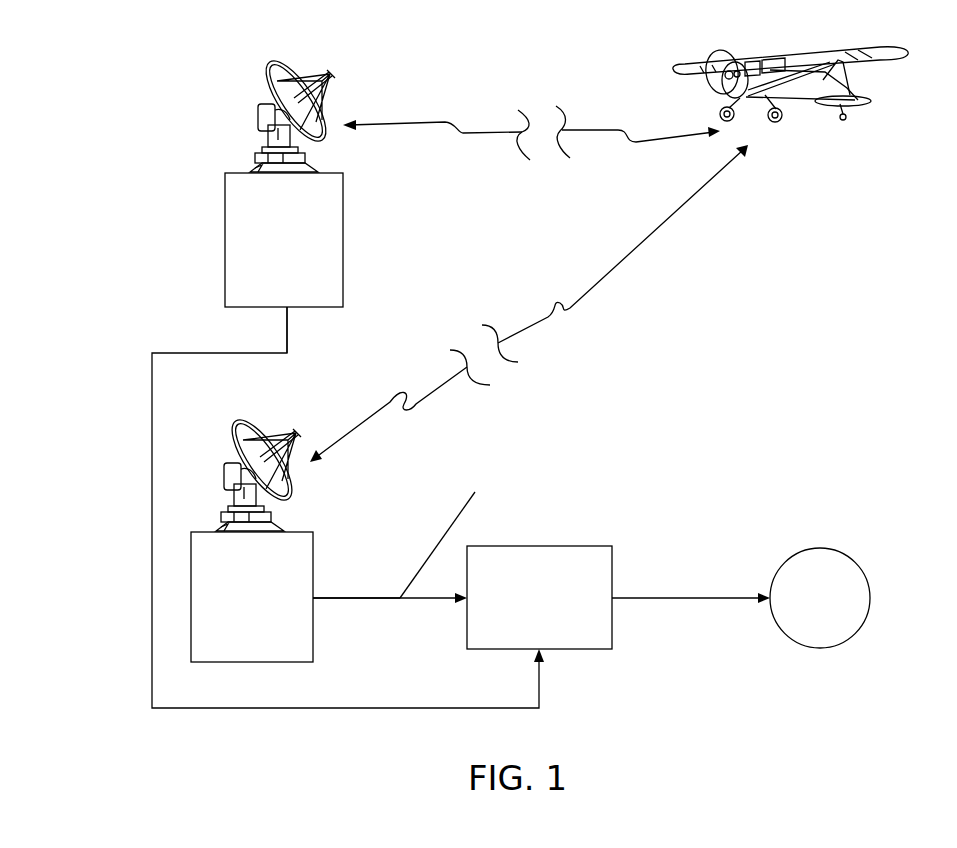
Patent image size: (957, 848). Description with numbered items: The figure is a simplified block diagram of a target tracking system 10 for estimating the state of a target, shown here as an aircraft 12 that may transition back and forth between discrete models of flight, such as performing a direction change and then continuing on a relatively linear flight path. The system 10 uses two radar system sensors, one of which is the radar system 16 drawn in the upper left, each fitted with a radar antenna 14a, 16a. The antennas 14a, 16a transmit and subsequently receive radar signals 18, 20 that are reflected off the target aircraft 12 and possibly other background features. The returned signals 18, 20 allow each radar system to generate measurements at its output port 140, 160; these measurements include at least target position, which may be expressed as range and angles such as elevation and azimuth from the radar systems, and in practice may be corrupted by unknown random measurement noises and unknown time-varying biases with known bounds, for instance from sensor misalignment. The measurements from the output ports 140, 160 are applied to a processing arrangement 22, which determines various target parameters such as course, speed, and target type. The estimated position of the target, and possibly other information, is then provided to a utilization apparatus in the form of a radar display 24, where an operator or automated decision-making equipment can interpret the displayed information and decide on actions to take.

The target tracking system 10 is at (402, 690).
The aircraft 12 is at (803, 106).
The radar antenna 14a is at (231, 465).
The output port 140 is at (313, 564).
The radar system 16 is at (225, 212).
The radar antenna 16a is at (265, 105).
The output port 160 is at (288, 308).
The radar signal 18 is at (437, 389).
The radar signal 20 is at (485, 133).
The processing arrangement 22 is at (512, 546).
The radar display 24 is at (820, 648).